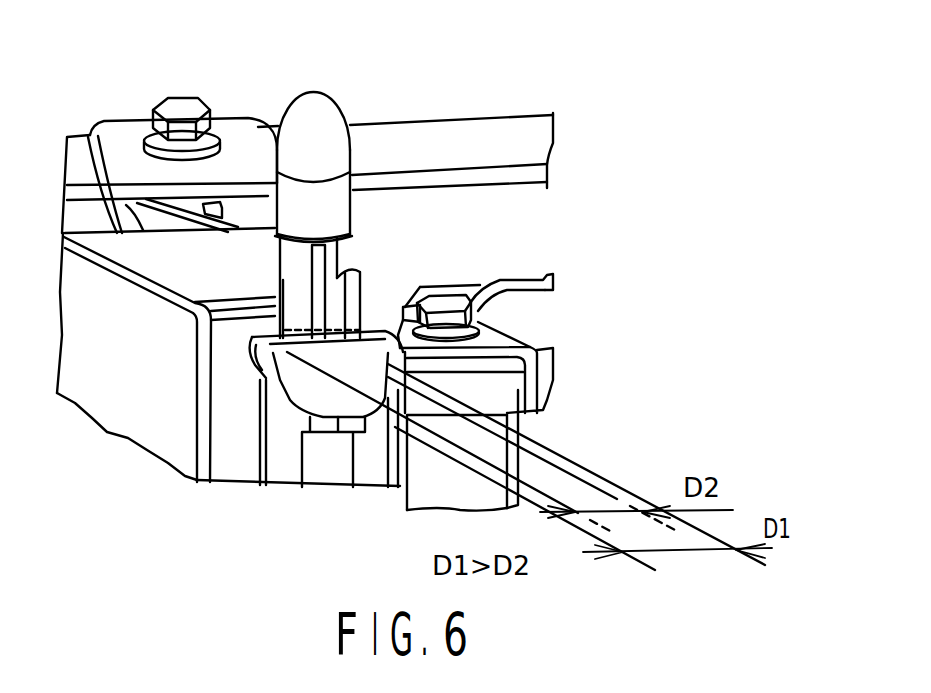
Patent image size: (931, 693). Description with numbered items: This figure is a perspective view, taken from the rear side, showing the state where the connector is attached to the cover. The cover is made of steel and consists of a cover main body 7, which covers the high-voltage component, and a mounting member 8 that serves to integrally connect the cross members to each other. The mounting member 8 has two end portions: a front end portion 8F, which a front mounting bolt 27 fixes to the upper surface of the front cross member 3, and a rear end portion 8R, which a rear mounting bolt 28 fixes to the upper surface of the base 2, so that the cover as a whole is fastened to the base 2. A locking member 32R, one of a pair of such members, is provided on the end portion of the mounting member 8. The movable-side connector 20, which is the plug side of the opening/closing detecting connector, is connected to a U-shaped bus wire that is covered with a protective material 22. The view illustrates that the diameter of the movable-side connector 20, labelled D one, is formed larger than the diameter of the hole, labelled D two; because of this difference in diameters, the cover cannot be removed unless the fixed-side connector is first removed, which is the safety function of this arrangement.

The base 2 is at (423, 493).
The front cross member 3 is at (507, 133).
The cover main body 7 is at (120, 397).
The mounting member 8 is at (337, 278).
The front end portion of the mounting member 8F is at (126, 140).
The rear end portion of the mounting member 8R is at (490, 335).
The movable-side connector 20 is at (360, 292).
The protective material 22 is at (323, 130).
The front mounting bolt 27 is at (183, 107).
The rear mounting bolt 28 is at (478, 318).
The locking member 32R is at (540, 277).